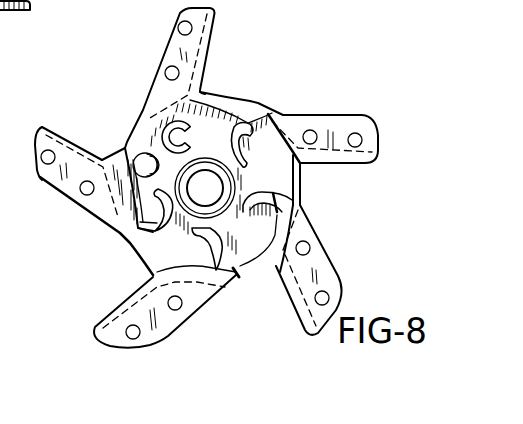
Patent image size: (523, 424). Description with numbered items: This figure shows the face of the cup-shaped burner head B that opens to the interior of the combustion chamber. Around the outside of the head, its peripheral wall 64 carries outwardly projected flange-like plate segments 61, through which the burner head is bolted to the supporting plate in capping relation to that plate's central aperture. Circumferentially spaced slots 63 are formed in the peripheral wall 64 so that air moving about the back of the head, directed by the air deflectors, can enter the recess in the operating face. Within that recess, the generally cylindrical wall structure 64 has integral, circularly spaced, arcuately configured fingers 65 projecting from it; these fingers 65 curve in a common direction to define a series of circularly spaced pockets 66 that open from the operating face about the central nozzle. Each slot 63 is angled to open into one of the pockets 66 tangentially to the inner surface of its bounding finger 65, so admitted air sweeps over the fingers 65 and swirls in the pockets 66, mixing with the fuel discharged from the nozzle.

The burner head B is at (122, 126).
The plate segments 61 is at (347, 120).
The slots 63 is at (300, 180).
The peripheral wall 64 is at (254, 103).
The fingers 65 is at (232, 132).
The pockets 66 is at (180, 259).